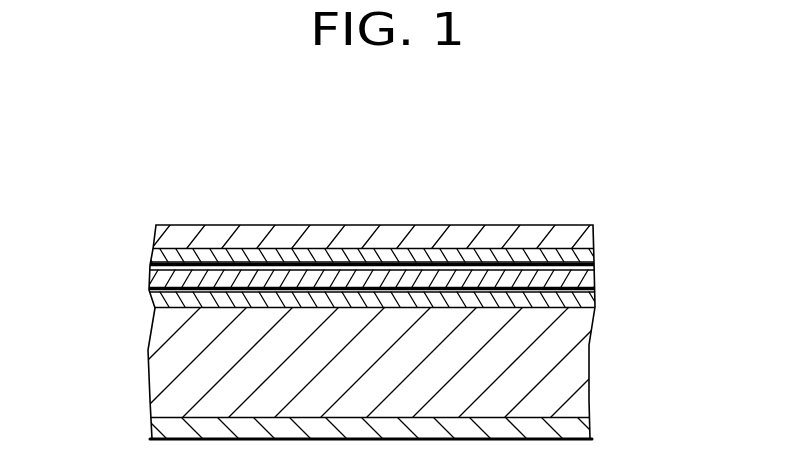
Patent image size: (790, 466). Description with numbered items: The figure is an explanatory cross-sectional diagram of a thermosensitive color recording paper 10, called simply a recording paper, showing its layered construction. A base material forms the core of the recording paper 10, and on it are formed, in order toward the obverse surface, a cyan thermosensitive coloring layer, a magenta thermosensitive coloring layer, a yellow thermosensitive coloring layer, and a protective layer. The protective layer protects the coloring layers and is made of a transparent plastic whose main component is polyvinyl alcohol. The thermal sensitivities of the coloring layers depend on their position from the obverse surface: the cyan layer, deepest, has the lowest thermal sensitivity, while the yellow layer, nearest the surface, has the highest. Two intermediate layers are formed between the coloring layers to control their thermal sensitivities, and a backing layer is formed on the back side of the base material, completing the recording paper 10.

The thermosensitive color recording paper 10 is at (383, 196).